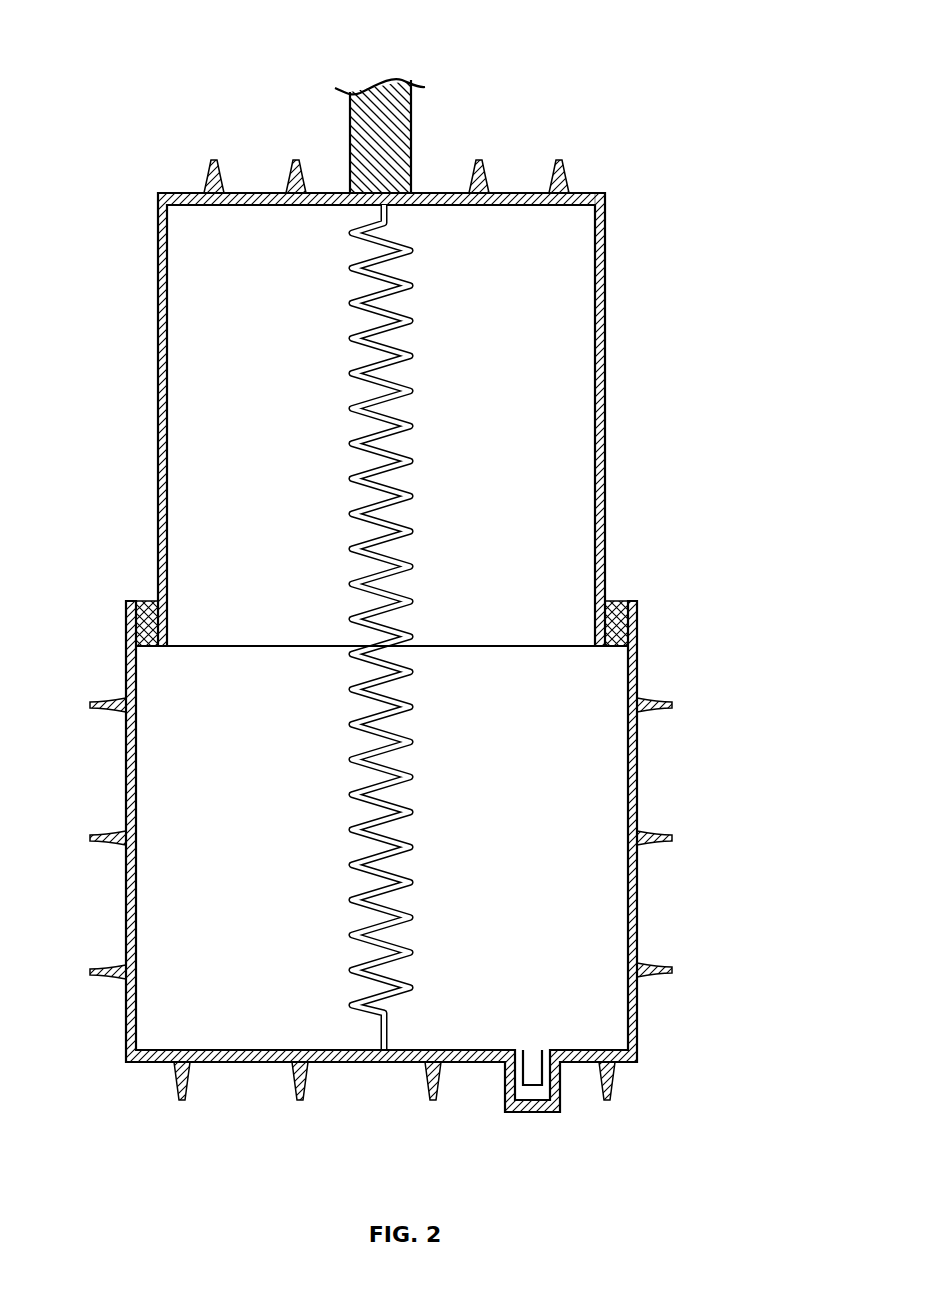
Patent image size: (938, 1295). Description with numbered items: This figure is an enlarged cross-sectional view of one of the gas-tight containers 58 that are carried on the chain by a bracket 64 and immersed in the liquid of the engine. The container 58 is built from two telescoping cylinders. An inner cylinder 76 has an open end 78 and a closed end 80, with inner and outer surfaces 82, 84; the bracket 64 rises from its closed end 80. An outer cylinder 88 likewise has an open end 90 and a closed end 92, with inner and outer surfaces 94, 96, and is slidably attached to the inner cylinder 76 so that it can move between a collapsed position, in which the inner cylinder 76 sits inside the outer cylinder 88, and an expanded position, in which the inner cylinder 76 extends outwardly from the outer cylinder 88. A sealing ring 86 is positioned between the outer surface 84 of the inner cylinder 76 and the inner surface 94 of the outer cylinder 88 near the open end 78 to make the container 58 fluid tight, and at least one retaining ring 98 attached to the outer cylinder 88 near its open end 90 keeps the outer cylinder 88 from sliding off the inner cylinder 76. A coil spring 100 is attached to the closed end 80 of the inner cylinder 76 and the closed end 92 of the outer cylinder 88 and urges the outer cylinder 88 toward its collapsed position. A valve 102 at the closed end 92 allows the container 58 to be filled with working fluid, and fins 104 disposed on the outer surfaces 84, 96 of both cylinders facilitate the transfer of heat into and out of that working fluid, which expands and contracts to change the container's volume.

The container 58 is at (110, 40).
The bracket 64 is at (402, 130).
The inner cylinder 76 is at (333, 182).
The open end 78 is at (520, 649).
The closed end 80 is at (580, 193).
The inner surface 82 is at (596, 400).
The outer surface 84 is at (605, 490).
The sealing ring 86 is at (128, 640).
The outer cylinder 88 is at (358, 1088).
The open end 90 is at (604, 195).
The closed end 92 is at (243, 1063).
The inner surface 94 is at (631, 1007).
The outer surface 96 is at (637, 888).
The retaining ring 98 is at (146, 604).
The coil spring 100 is at (412, 384).
The valve 102 is at (527, 1100).
The fins 104 is at (214, 160).